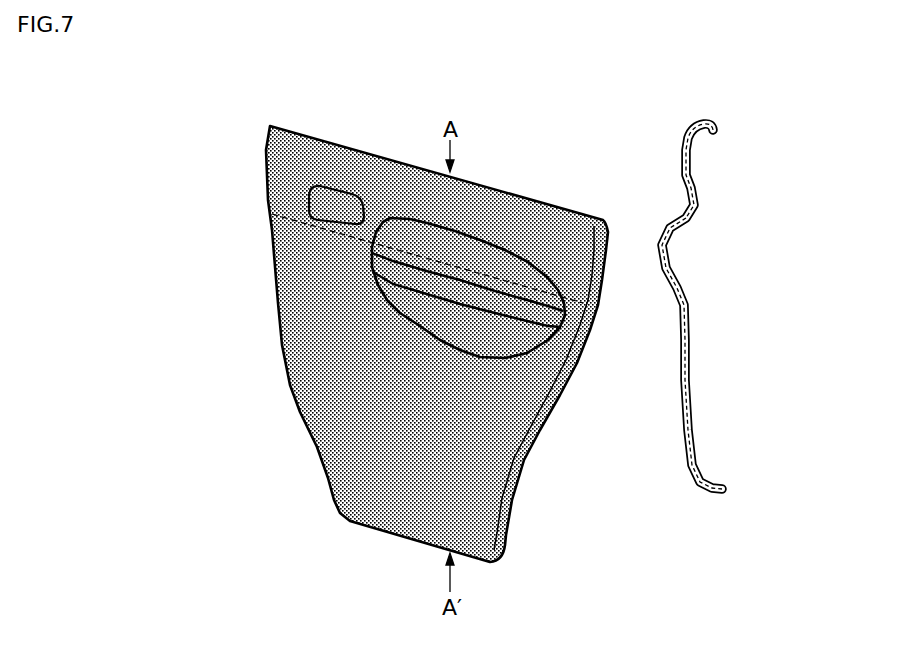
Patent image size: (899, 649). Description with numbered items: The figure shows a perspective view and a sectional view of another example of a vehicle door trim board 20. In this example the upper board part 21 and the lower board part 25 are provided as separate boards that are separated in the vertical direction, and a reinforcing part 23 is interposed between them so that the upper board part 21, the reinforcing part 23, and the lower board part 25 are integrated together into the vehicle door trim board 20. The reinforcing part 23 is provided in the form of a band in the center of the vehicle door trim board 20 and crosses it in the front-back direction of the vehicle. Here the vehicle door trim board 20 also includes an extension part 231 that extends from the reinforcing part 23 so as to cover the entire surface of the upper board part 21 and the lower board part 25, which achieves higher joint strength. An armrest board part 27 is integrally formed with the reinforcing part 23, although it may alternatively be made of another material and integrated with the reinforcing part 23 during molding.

The vehicle door trim board 20 is at (465, 323).
The upper board part 21 is at (300, 151).
The reinforcing part 23 is at (292, 290).
The lower board part 25 is at (332, 444).
The armrest board part 27 is at (523, 343).
The extension part 231 is at (475, 171).